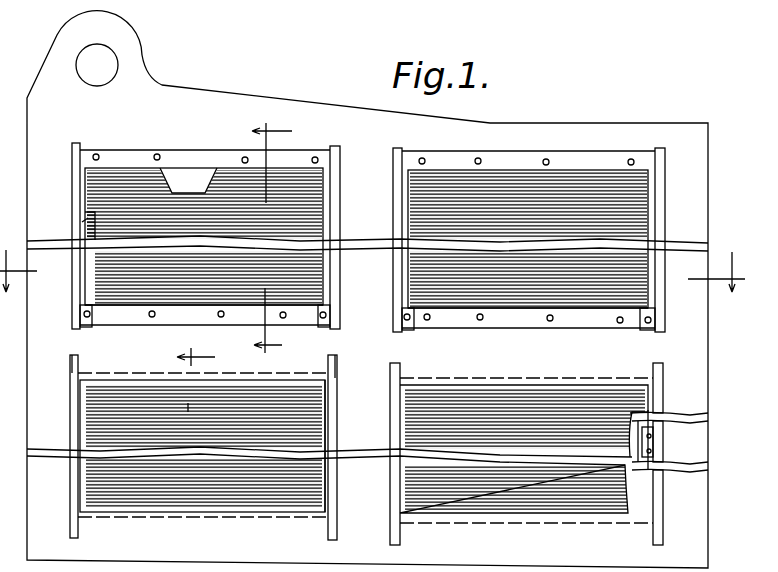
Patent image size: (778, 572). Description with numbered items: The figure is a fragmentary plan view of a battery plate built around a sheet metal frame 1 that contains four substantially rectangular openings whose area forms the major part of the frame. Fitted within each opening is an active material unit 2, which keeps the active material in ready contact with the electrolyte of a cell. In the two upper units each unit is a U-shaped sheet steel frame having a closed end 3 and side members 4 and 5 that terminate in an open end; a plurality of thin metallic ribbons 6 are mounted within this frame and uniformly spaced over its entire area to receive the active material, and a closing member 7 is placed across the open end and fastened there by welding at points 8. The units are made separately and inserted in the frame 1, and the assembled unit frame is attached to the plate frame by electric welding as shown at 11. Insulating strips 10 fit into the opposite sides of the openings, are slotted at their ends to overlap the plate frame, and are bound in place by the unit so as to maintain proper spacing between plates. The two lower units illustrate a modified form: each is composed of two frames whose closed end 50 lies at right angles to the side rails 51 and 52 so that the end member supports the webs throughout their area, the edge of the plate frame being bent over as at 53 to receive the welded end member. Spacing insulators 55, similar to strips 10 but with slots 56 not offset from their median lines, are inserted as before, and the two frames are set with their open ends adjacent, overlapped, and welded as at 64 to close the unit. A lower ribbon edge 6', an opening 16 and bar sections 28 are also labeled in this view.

The sheet metal frame 1 is at (349, 128).
The active material unit 2 is at (517, 148).
The closed end 3 is at (626, 147).
The side member 4 is at (82, 226).
The side member 5 is at (325, 232).
The thin metallic ribbons 6 is at (366, 211).
The lower grate edge 6' is at (366, 328).
The closing member 7 is at (203, 316).
The welding points 8 is at (95, 318).
The insulating strips 10 is at (72, 193).
The electric welding 11 is at (96, 154).
The opening 16 is at (188, 408).
The bar section 28 is at (549, 454).
The closed end 50 is at (212, 512).
The side rail 51 is at (330, 486).
The side rail 52 is at (78, 481).
The bent-over edge 53 is at (510, 378).
The spacing insulators 55 is at (75, 412).
The slots 56 is at (74, 375).
The weld 64 is at (655, 441).